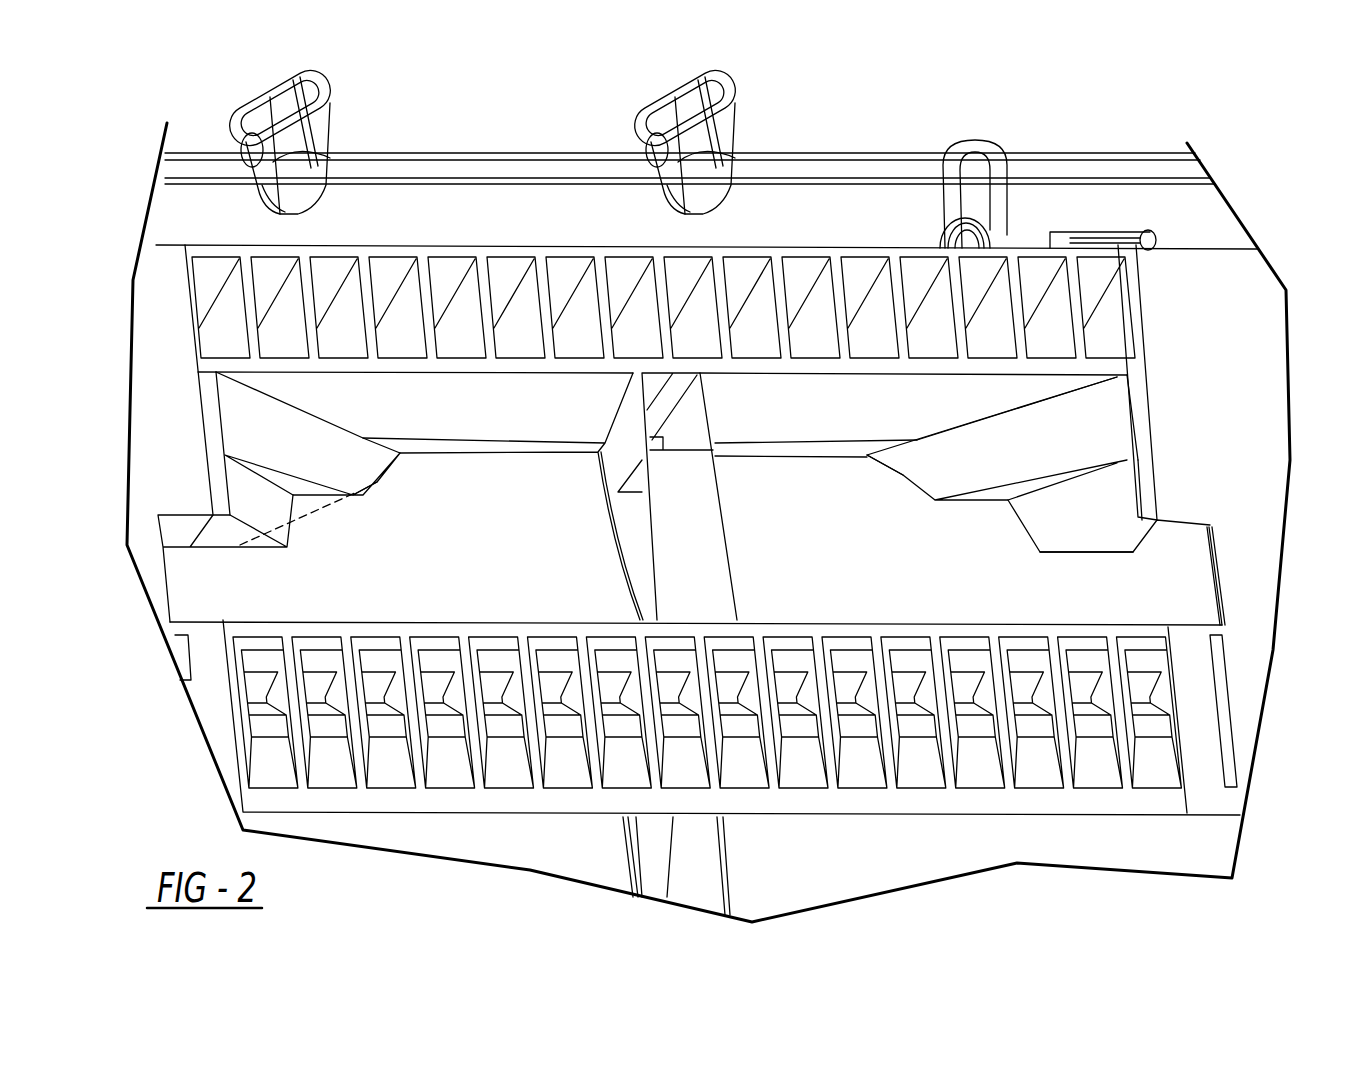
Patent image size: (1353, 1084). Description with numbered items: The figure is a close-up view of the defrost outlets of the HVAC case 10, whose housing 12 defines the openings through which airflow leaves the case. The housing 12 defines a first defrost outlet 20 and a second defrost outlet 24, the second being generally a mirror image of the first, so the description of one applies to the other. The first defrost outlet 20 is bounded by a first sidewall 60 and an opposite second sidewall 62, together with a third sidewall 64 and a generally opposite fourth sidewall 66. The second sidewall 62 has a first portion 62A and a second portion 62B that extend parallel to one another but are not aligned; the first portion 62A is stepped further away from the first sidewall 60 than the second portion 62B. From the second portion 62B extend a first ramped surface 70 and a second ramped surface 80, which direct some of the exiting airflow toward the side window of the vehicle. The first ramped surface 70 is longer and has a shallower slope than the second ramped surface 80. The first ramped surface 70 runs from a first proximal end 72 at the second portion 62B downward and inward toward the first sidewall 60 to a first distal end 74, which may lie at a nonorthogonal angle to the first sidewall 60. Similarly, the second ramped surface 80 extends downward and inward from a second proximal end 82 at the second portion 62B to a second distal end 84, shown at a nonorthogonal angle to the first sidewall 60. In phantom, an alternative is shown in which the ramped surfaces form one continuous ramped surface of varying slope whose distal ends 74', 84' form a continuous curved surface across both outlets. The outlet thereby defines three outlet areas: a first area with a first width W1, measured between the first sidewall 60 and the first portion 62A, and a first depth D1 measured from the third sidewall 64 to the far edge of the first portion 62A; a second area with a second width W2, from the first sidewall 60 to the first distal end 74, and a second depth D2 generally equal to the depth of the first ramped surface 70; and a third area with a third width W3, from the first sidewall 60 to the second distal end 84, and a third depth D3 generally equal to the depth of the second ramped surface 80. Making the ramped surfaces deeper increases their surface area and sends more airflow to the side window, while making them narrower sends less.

The HVAC case 10 is at (190, 100).
The housing 12 is at (175, 367).
The first defrost outlet 20 is at (820, 400).
The second defrost outlet 24 is at (516, 405).
The first sidewall 60 is at (730, 610).
The second sidewall 62 is at (1123, 382).
The first portion of the second sidewall 62A is at (1218, 608).
The second portion of the second sidewall 62B is at (1138, 446).
The third sidewall 64 is at (1052, 615).
The fourth sidewall 66 is at (755, 415).
The first ramped surface 70 is at (292, 437).
The first proximal end 72 is at (1118, 410).
The first distal end 74 is at (879, 431).
The first distal end (continuous curved alternative) 74' is at (416, 503).
The second ramped surface 80 is at (257, 512).
The second proximal end 82 is at (1145, 505).
The second distal end 84 is at (1036, 551).
The second distal end (continuous curved alternative) 84' is at (343, 530).
The first width W1 is at (1207, 595).
The second width W2 is at (897, 475).
The third width W3 is at (1017, 525).
The first depth D1 is at (1225, 625).
The second depth D2 is at (1157, 375).
The third depth D3 is at (1217, 520).